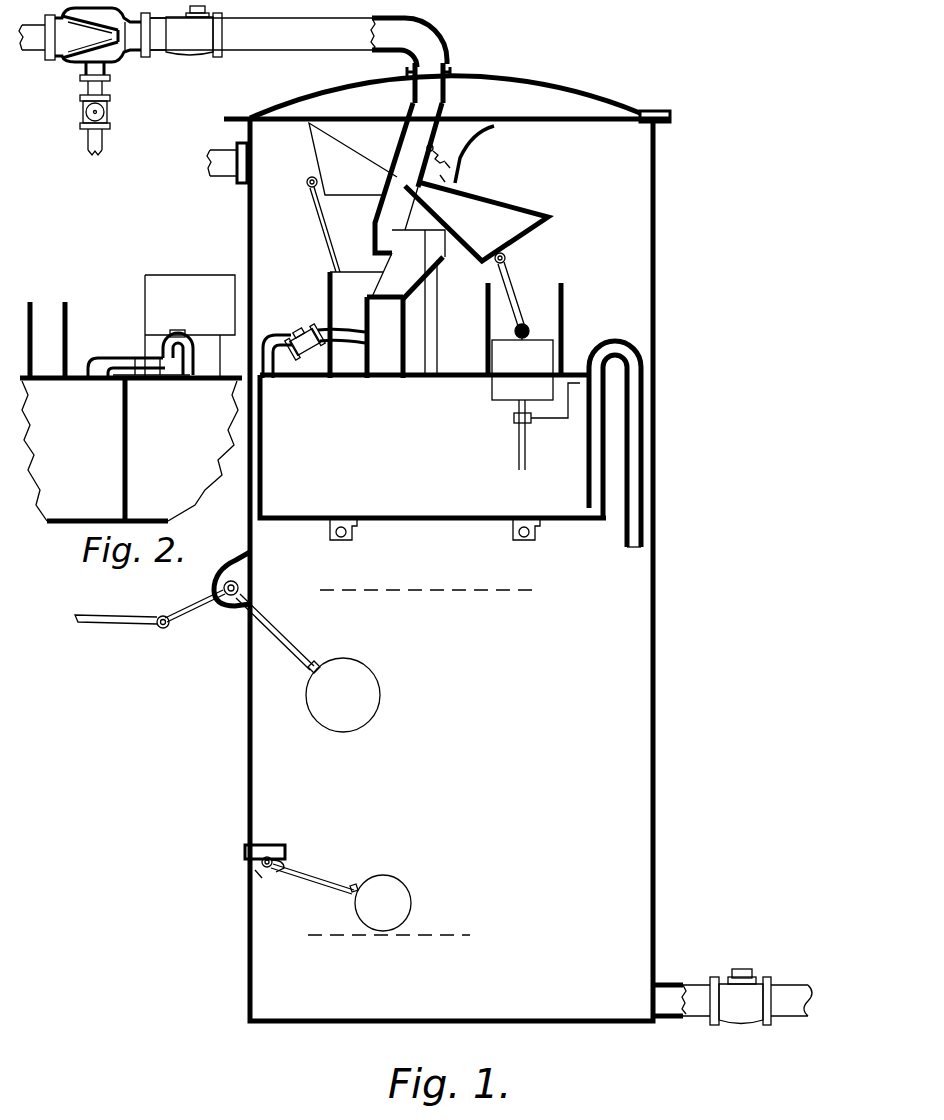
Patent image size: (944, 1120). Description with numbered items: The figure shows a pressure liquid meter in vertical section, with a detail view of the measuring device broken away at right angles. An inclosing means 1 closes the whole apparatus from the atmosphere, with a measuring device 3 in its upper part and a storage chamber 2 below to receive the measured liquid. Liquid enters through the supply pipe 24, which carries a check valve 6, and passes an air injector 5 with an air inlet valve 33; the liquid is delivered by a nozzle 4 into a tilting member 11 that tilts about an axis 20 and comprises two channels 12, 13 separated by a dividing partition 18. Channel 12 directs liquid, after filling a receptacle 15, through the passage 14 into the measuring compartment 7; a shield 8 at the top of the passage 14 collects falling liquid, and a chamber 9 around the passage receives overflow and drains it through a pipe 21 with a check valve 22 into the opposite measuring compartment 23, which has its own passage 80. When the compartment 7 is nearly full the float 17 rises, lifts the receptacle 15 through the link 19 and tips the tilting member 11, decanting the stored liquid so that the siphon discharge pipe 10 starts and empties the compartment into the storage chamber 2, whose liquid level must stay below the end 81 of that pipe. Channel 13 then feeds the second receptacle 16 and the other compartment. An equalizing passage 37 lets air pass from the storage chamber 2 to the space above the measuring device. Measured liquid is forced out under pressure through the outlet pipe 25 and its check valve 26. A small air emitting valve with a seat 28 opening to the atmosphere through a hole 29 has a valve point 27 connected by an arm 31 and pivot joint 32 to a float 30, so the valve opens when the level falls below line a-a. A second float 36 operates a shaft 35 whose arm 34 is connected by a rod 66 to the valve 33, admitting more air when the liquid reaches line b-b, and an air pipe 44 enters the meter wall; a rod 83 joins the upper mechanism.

In FIG. 1, the inclosing means 1 is at (658, 590).
In FIG. 1, the storage chamber 2 is at (569, 917).
In FIG. 1, the measuring device 3 is at (445, 520).
In FIG. 1, the nozzle 4 is at (450, 95).
In FIG. 1, the air injector 5 is at (72, 64).
In FIG. 1, the check valve 6 is at (190, 47).
In FIG. 1, the measuring compartment 7 is at (433, 457).
In FIG. 2, the measuring compartment 7 is at (131, 449).
In FIG. 1, the shield 8 is at (412, 267).
In FIG. 1, the chamber 9 is at (345, 290).
In FIG. 2, the chamber 9 is at (190, 290).
In FIG. 1, the discharge pipe 10 is at (641, 395).
In FIG. 1, the tilting member 11 is at (445, 162).
In FIG. 1, the channel 12 is at (418, 145).
In FIG. 1, the channel 13 is at (457, 123).
In FIG. 1, the passage 14 is at (390, 333).
In FIG. 2, the passage 14 is at (212, 350).
In FIG. 1, the receptacle 15 is at (476, 221).
In FIG. 1, the receptacle 16 is at (353, 159).
In FIG. 1, the float 17 is at (505, 362).
In FIG. 1, the dividing partition 18 is at (440, 175).
In FIG. 1, the link 19 is at (507, 272).
In FIG. 1, the axis 20 is at (448, 150).
In FIG. 1, the pipe 21 is at (322, 343).
In FIG. 2, the pipe 21 is at (113, 363).
In FIG. 1, the check valve 22 is at (298, 336).
In FIG. 2, the check valve 22 is at (165, 340).
In FIG. 2, the measuring compartment 23 is at (87, 442).
In FIG. 1, the supply pipe 24 is at (274, 38).
In FIG. 1, the outlet pipe 25 is at (688, 988).
In FIG. 1, the check valve 26 is at (743, 995).
In FIG. 1, the valve point 27 is at (285, 868).
In FIG. 1, the valve seat 28 is at (280, 846).
In FIG. 1, the hole 29 is at (243, 853).
In FIG. 1, the float 30 is at (390, 897).
In FIG. 1, the arm 31 is at (300, 882).
In FIG. 1, the pivot joint 32 is at (253, 878).
In FIG. 1, the air inlet valve 33 is at (87, 120).
In FIG. 1, the arm 34 is at (203, 604).
In FIG. 1, the shaft 35 is at (227, 600).
In FIG. 1, the float 36 is at (360, 693).
In FIG. 1, the equalizing passage 37 is at (258, 522).
In FIG. 1, the pipe 44 is at (224, 177).
In FIG. 1, the rod 66 is at (128, 630).
In FIG. 2, the passage 80 is at (47, 325).
In FIG. 1, the end of discharge pipe 81 is at (630, 545).
In FIG. 1, the rod 83 is at (320, 218).